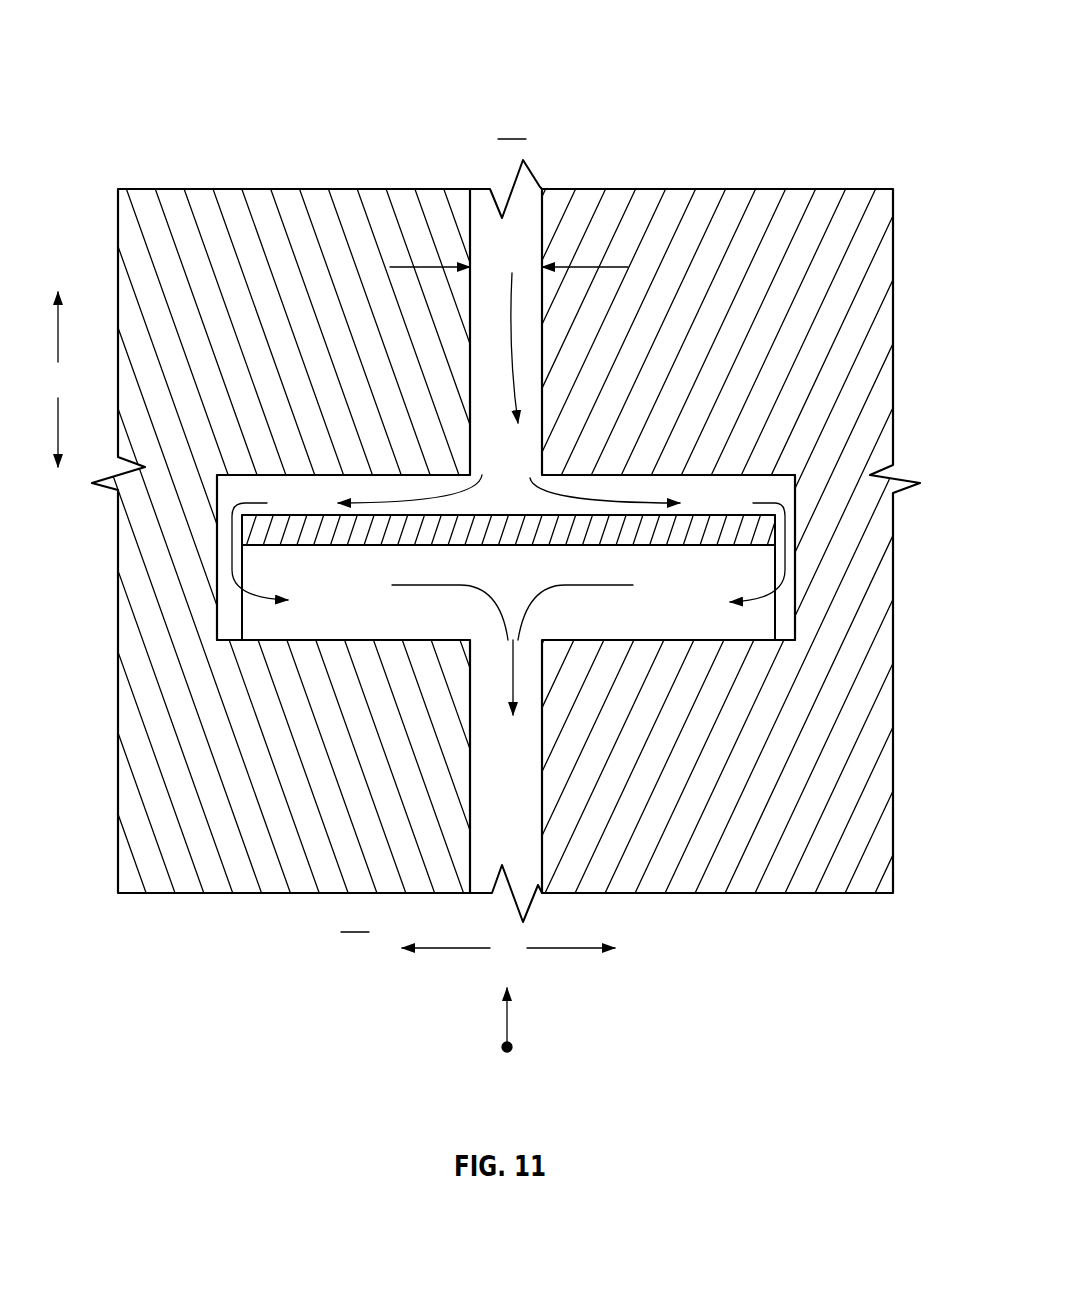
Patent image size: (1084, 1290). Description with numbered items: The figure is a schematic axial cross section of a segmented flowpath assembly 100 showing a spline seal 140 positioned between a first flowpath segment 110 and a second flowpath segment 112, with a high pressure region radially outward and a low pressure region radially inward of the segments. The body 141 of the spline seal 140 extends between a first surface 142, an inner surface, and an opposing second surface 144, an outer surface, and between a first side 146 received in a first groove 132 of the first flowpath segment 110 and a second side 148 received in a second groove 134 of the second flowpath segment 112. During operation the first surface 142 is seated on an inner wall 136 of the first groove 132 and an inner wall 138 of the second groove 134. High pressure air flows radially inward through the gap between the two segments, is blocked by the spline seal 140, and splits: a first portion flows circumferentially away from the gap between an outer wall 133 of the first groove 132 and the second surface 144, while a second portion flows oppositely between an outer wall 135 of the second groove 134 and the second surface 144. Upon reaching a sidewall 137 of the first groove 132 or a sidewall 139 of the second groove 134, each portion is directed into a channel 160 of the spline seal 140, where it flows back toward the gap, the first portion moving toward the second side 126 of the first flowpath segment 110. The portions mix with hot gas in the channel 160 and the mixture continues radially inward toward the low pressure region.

The segmented flowpath assembly 100 is at (773, 85).
The first flowpath segment 110 is at (290, 225).
The second flowpath segment 112 is at (707, 220).
The second side 126 is at (452, 157).
The first groove 132 is at (400, 482).
The outer wall 133 is at (242, 473).
The second groove 134 is at (617, 490).
The outer wall 135 is at (676, 470).
The inner wall 136 is at (355, 632).
The sidewall 137 is at (215, 553).
The inner wall 138 is at (595, 633).
The sidewall 139 is at (800, 488).
The spline seal 140 is at (305, 507).
The body 141 is at (727, 510).
The first surface 142 is at (318, 645).
The second surface 144 is at (280, 522).
The first side 146 is at (240, 648).
The second side 148 is at (760, 648).
The channel 160 is at (672, 620).